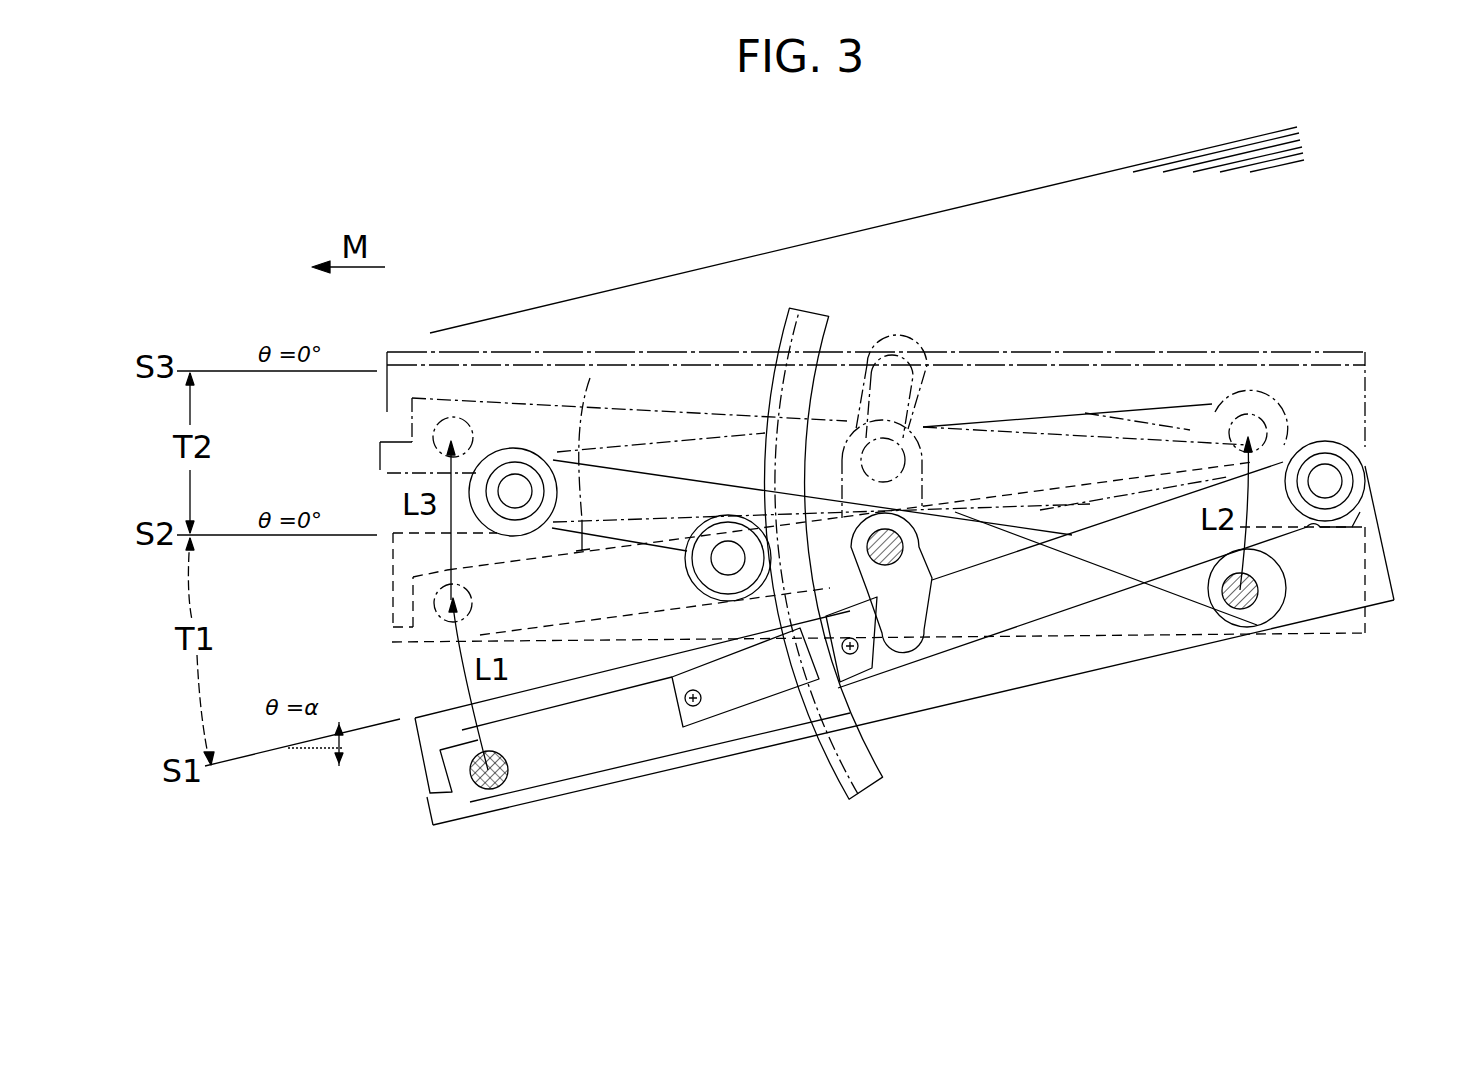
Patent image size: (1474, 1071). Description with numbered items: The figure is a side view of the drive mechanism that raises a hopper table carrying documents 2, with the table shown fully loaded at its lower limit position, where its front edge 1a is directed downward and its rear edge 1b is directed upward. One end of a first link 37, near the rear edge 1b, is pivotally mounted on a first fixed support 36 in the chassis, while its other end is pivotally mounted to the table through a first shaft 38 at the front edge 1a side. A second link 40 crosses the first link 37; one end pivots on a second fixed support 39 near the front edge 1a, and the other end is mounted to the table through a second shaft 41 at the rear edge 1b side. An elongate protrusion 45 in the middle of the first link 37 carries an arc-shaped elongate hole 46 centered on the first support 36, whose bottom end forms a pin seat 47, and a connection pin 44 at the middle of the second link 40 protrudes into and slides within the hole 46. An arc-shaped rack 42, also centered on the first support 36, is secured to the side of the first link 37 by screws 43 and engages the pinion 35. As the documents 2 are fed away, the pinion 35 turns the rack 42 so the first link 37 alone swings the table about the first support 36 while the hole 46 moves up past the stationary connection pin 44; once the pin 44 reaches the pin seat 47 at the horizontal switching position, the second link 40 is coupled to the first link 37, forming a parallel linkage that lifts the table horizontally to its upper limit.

The documents 2 is at (1245, 140).
The front edge 1a is at (418, 758).
The rear edge 1b is at (1382, 548).
The pinion 35 is at (727, 516).
The first fixed support 36 is at (1323, 483).
The first link 37 is at (571, 400).
The first shaft 38 is at (497, 788).
The second fixed support 39 is at (518, 490).
The second link 40 is at (1085, 413).
The second shaft 41 is at (1245, 600).
The arc-shaped rack 42 is at (829, 318).
The screws 43 is at (693, 707).
The connection pin 44 is at (885, 529).
The elongate protrusion 45 is at (905, 356).
The arc-shaped elongate hole 46 is at (900, 593).
The pin seat 47 is at (907, 627).